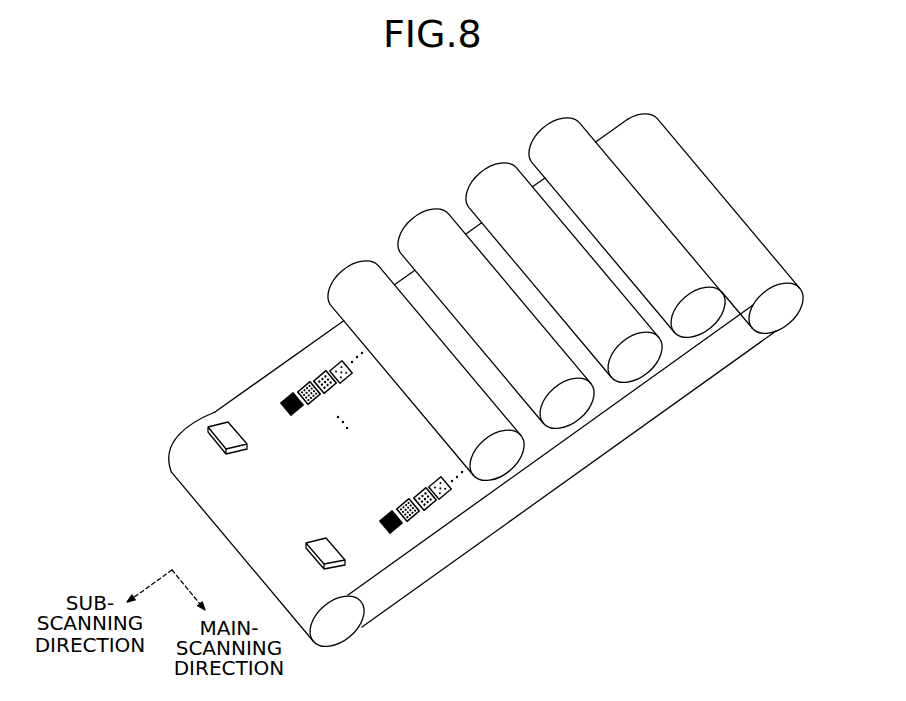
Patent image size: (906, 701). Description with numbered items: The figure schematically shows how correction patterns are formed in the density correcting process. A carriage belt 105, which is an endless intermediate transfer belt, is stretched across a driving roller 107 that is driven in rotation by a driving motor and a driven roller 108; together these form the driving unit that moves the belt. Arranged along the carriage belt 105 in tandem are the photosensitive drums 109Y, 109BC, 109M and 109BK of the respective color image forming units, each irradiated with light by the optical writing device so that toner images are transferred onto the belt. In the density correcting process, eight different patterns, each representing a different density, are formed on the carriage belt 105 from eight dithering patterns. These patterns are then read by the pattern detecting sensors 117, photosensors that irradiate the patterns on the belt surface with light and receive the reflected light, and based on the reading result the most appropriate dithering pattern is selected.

The carriage belt 105 is at (698, 193).
The driving roller 107 is at (340, 635).
The driven roller 108 is at (782, 320).
The photosensitive drum 109Y is at (343, 265).
The photosensitive drum (cyan) 109BC is at (414, 213).
The photosensitive drum 109M is at (481, 169).
The photosensitive drum 109BK is at (538, 124).
The pattern detecting sensor 117 is at (216, 419).